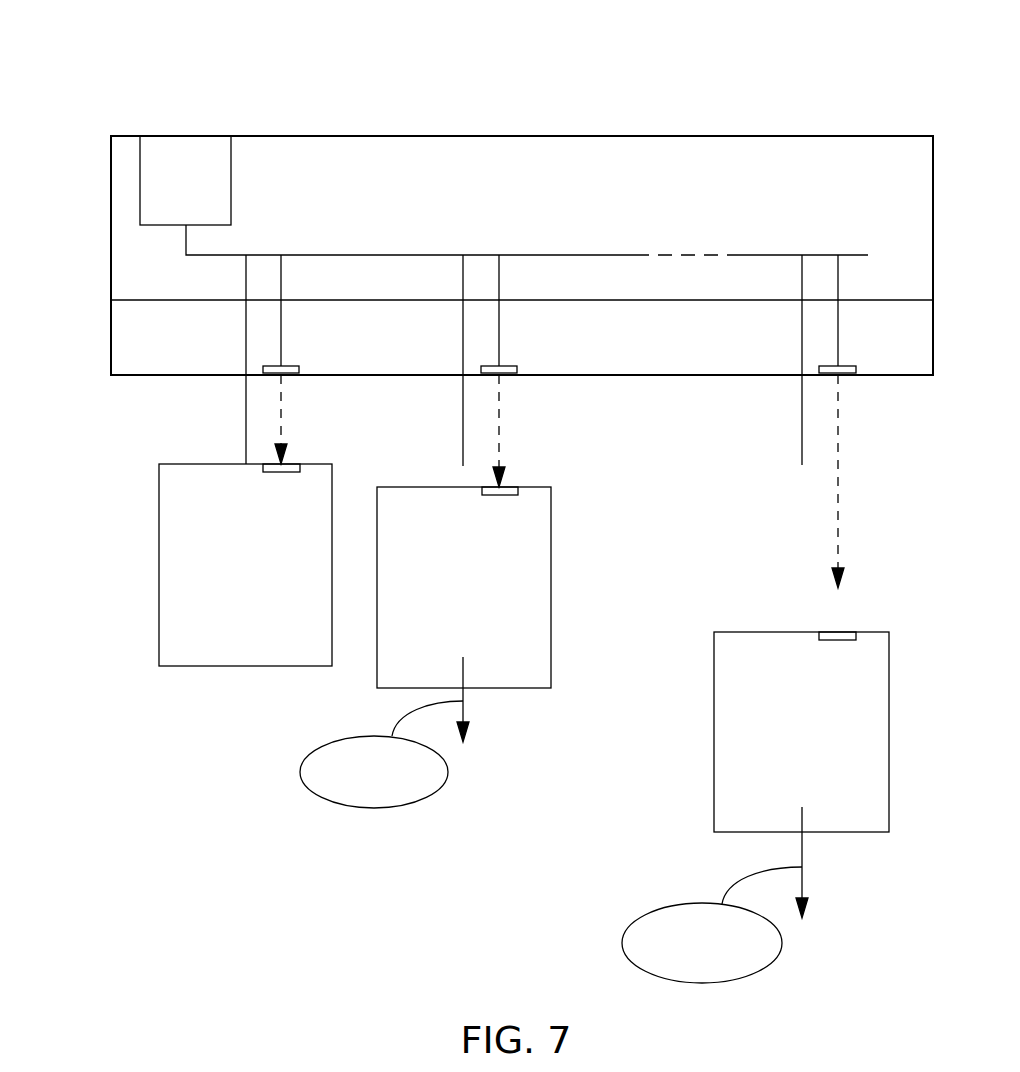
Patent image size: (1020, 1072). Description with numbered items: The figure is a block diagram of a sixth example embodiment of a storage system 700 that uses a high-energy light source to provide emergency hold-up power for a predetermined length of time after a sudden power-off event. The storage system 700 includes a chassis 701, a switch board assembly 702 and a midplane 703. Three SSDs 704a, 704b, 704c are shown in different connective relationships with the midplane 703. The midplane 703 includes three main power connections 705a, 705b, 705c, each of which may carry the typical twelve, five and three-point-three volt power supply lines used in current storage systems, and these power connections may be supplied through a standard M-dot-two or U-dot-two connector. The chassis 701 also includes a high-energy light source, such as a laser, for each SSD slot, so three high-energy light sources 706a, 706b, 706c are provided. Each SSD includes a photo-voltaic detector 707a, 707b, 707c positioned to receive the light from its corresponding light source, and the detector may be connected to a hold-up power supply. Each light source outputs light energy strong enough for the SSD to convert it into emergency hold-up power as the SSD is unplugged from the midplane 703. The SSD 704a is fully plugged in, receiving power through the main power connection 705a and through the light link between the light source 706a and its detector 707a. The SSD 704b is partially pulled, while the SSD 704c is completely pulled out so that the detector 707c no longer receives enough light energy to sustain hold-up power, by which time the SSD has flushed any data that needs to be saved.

The storage system 700 is at (250, 80).
The chassis 701 is at (92, 136).
The switch board assembly 702 is at (504, 195).
The midplane 703 is at (522, 332).
The SSD 704a is at (245, 565).
The SSD 704b is at (425, 647).
The SSD 704c is at (755, 807).
The main power connection 705a is at (246, 450).
The main power connection 705b is at (463, 450).
The main power connection 705c is at (802, 450).
The high-energy light source 706a is at (282, 359).
The high-energy light source 706b is at (500, 359).
The high-energy light source 706c is at (838, 359).
The photo-voltaic detector 707a is at (276, 474).
The photo-voltaic detector 707b is at (493, 496).
The photo-voltaic detector 707c is at (830, 641).